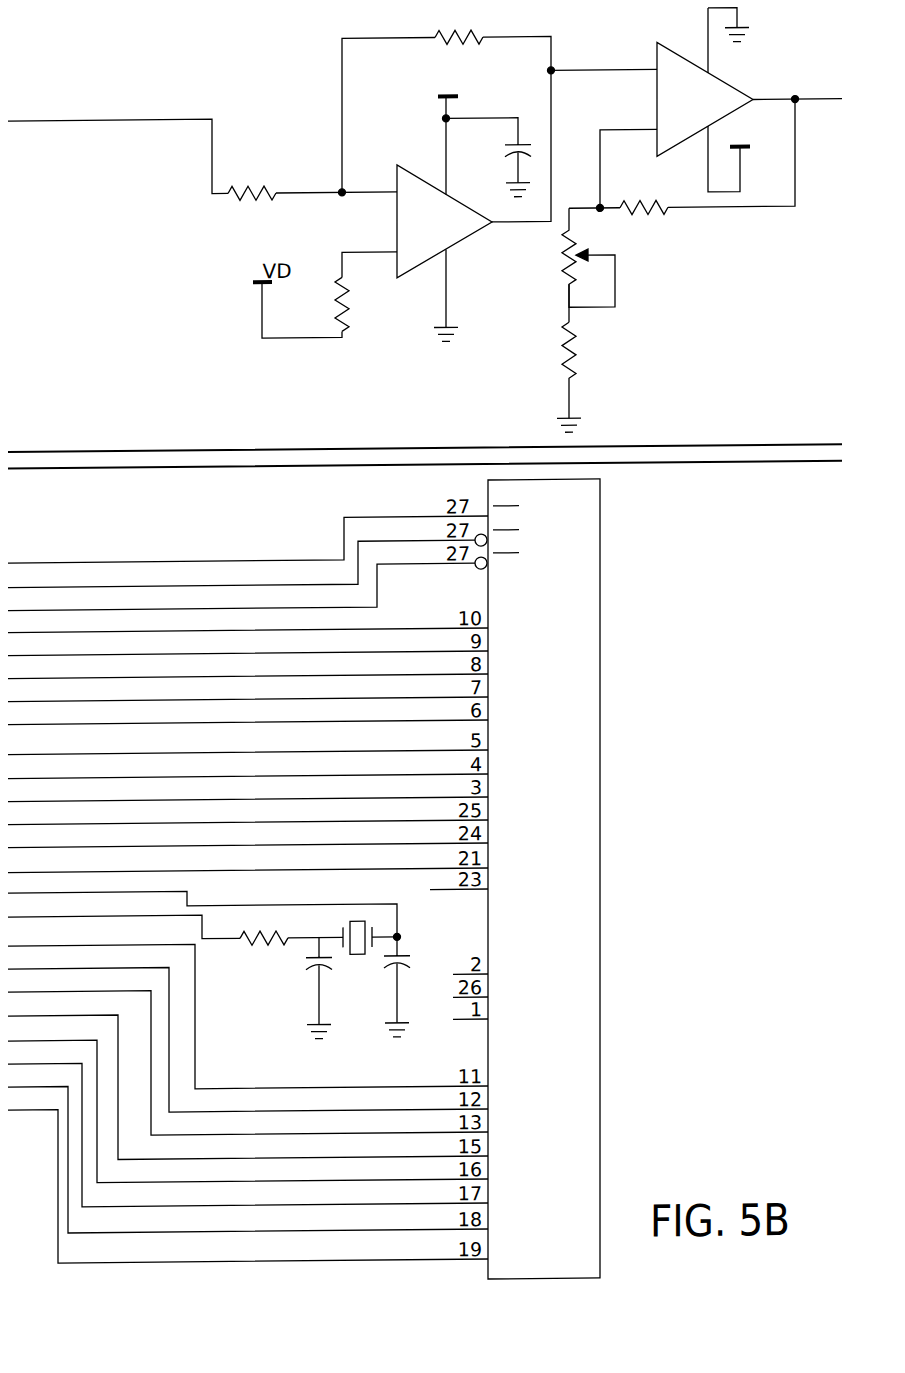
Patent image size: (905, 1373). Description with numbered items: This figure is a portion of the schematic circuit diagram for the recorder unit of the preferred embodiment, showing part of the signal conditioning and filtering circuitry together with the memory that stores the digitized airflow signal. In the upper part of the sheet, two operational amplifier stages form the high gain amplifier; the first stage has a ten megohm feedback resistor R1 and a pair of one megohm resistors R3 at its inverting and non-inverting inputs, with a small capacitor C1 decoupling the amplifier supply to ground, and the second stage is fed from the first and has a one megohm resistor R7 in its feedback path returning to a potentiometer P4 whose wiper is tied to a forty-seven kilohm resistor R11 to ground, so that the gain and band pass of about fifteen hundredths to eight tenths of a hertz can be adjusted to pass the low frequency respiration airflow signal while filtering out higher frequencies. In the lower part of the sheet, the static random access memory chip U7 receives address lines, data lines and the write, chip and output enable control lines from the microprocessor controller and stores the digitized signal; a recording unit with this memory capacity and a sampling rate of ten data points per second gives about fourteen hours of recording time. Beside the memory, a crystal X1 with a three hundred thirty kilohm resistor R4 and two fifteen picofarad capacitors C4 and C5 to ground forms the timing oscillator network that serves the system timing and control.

The feedback resistor 10M R1 is at (459, 39).
The 1M resistor R3 is at (306, 246).
The 0.01 capacitor C1 is at (487, 155).
The 1M resistor R7 is at (644, 205).
The 1M potentiometer P4 is at (588, 265).
The 47K resistor R11 is at (587, 377).
The SRAM P62256L U7 is at (544, 896).
The 330K resistor R4 is at (262, 928).
The crystal X1 is at (348, 931).
The 15 capacitor C4 is at (335, 988).
The 15 capacitor C5 is at (414, 986).